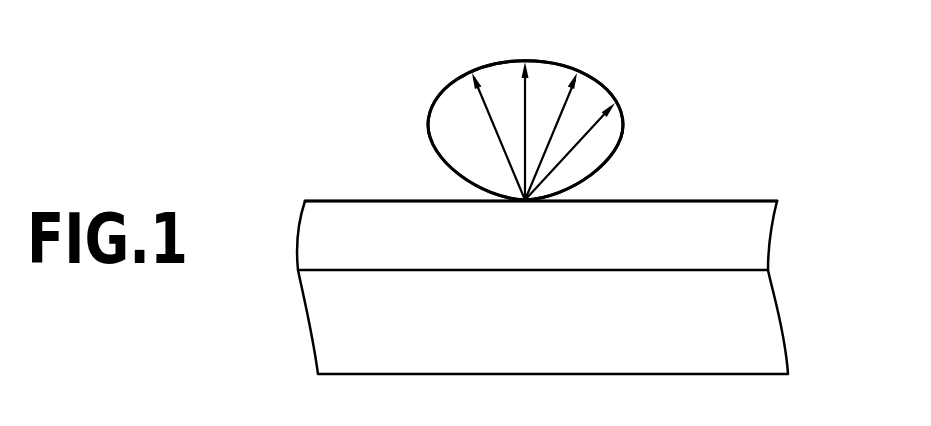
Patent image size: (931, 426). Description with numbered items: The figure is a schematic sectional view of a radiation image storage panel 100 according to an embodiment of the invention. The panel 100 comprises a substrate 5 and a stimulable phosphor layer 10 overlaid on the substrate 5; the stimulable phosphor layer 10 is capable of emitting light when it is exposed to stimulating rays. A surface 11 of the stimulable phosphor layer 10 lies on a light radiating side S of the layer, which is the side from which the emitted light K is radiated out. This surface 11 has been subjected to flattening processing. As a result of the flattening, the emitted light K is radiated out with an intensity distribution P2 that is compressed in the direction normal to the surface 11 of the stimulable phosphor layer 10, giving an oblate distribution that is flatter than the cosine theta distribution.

The radiation image storage panel 100 is at (358, 163).
The substrate 5 is at (777, 328).
The stimulable phosphor layer 10 is at (760, 247).
The surface 11 is at (725, 201).
The light radiating side S is at (700, 138).
The intensity distribution P2 is at (625, 103).
The emitted light K is at (527, 83).